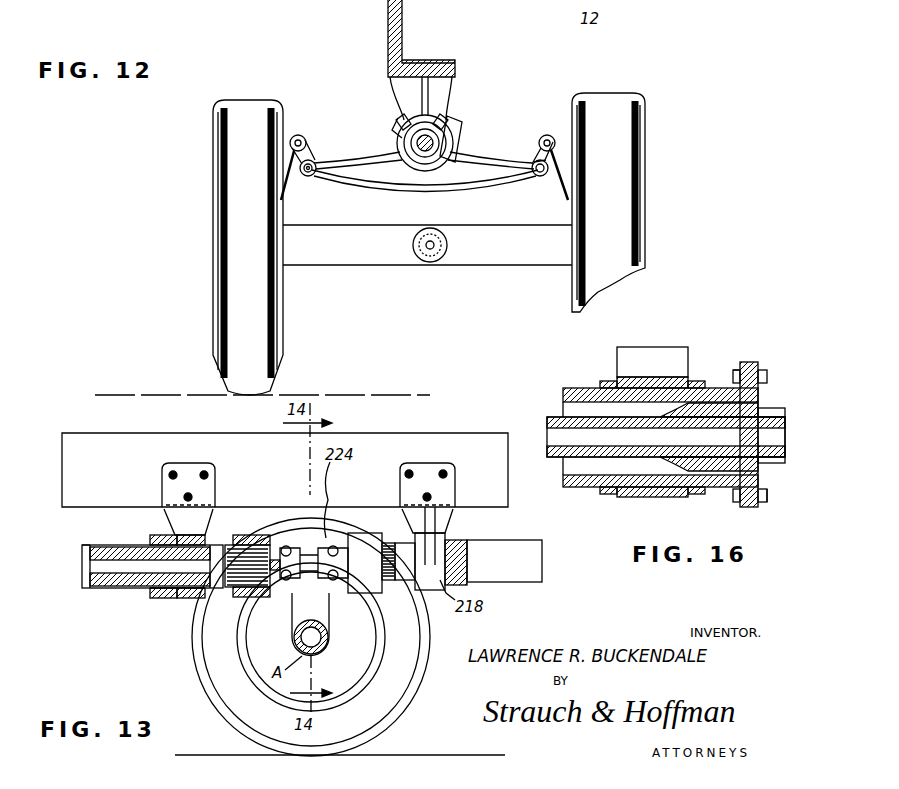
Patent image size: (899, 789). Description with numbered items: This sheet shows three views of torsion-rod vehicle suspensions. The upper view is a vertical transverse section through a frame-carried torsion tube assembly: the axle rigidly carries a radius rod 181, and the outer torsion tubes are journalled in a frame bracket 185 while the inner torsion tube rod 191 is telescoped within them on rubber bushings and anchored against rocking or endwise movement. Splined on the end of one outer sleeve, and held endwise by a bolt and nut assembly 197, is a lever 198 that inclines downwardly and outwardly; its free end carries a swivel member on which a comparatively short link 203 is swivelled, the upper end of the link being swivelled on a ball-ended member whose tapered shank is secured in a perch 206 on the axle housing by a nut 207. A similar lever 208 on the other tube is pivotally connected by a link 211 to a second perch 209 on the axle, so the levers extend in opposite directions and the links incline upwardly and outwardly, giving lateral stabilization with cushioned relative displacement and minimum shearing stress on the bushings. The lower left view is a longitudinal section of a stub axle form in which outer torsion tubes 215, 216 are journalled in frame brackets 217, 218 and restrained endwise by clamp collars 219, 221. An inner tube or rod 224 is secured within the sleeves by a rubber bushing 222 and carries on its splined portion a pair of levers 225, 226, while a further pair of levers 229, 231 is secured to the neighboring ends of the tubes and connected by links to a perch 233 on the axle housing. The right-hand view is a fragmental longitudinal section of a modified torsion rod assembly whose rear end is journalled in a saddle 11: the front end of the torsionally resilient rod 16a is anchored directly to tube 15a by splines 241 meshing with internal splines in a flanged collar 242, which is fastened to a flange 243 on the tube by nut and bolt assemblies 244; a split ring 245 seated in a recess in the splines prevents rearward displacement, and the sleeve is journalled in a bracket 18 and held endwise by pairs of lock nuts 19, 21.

In FIG. 12, the saddle 11 is at (328, 38).
In FIG. 12, the second perch 209 is at (300, 171).
In FIG. 12, the perch 206 is at (560, 160).
In FIG. 12, the radius rod 181 is at (428, 262).
In FIG. 12, the frame bracket 185 is at (445, 95).
In FIG. 12, the inner torsion tube rod 191 is at (427, 152).
In FIG. 12, the bolt and nut assembly 197 is at (402, 113).
In FIG. 12, the lever 198 is at (455, 160).
In FIG. 12, the lever 208 is at (366, 183).
In FIG. 12, the link 211 is at (335, 128).
In FIG. 12, the nut 207 is at (549, 135).
In FIG. 12, the link 203 is at (536, 150).
In FIG. 13, the rubber bushing 222 is at (115, 548).
In FIG. 13, the inner tube or rod 224 is at (93, 565).
In FIG. 13, the lever 225 is at (280, 540).
In FIG. 13, the lever 229 is at (243, 557).
In FIG. 13, the lever 231 is at (374, 530).
In FIG. 13, the lever 226 is at (372, 545).
In FIG. 13, the bracket 218 is at (430, 470).
In FIG. 13, the clamp collar 221 is at (480, 545).
In FIG. 13, the outer torsion tube 216 is at (515, 580).
In FIG. 13, the perch 233 is at (326, 618).
In FIG. 13, the outer torsion tube 215 is at (112, 598).
In FIG. 13, the clamp collar 219 is at (150, 598).
In FIG. 13, the bracket 217 is at (188, 600).
In FIG. 16, the rod 16a is at (556, 420).
In FIG. 16, the tube 15a is at (588, 490).
In FIG. 16, the splines 241 is at (688, 462).
In FIG. 16, the flanged collar 242 is at (760, 470).
In FIG. 16, the flange 243 is at (745, 505).
In FIG. 16, the nut and bolt assemblies 244 is at (768, 500).
In FIG. 16, the split ring 245 is at (770, 403).
In FIG. 16, the bracket 18 is at (643, 365).
In FIG. 16, the lock nuts 19 is at (602, 382).
In FIG. 16, the lock nuts 21 is at (692, 382).